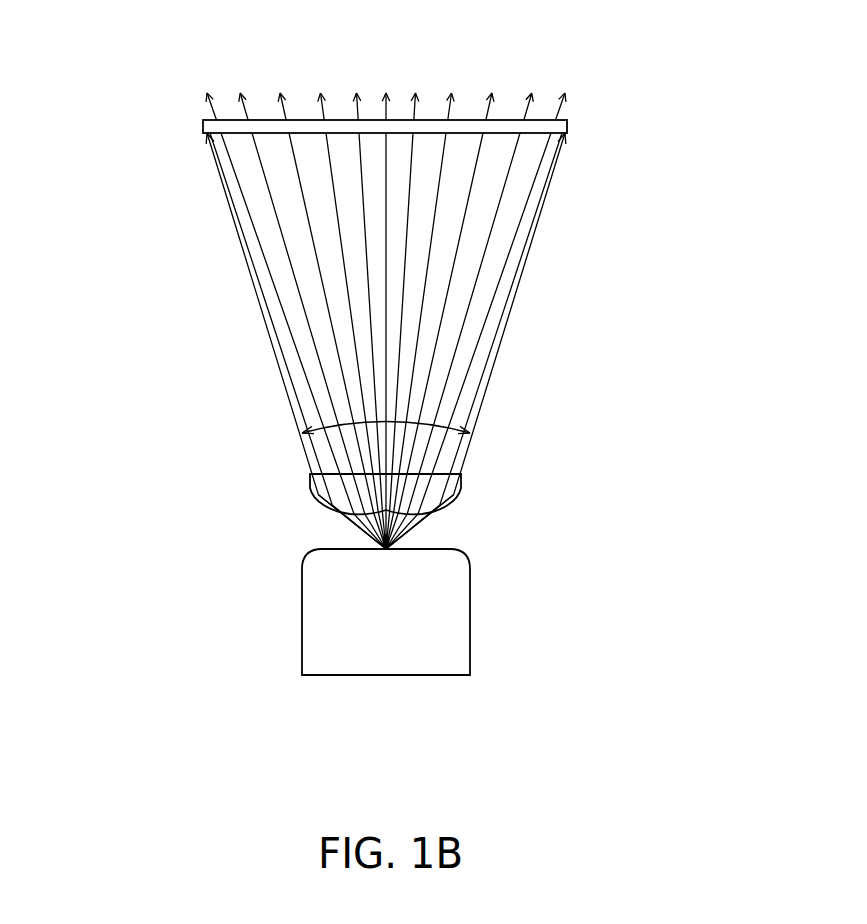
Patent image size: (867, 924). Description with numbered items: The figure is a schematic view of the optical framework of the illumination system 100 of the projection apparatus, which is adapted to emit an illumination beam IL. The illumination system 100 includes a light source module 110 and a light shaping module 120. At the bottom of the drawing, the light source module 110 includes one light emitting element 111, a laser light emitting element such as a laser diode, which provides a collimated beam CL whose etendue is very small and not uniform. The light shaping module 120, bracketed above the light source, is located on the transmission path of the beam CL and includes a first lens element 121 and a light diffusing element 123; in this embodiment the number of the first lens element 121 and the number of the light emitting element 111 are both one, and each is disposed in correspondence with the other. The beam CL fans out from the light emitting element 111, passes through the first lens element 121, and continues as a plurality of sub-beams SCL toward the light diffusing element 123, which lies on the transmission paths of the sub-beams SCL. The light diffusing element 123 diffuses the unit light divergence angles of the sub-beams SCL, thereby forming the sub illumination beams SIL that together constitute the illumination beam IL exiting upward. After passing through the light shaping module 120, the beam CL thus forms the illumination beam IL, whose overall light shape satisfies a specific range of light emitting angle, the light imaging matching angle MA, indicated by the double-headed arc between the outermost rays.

The illumination system 100 is at (370, 382).
The light source module 110 is at (462, 612).
The light emitting element 111 is at (452, 613).
The light shaping module 120 is at (327, 315).
The first lens element 121 is at (304, 494).
The light diffusing element 123 is at (200, 129).
The sub-beams SCL is at (440, 170).
The illumination beam IL is at (575, 112).
The sub illumination beams SIL is at (527, 119).
The light imaging matching angle MA is at (435, 422).
The beam CL is at (447, 530).